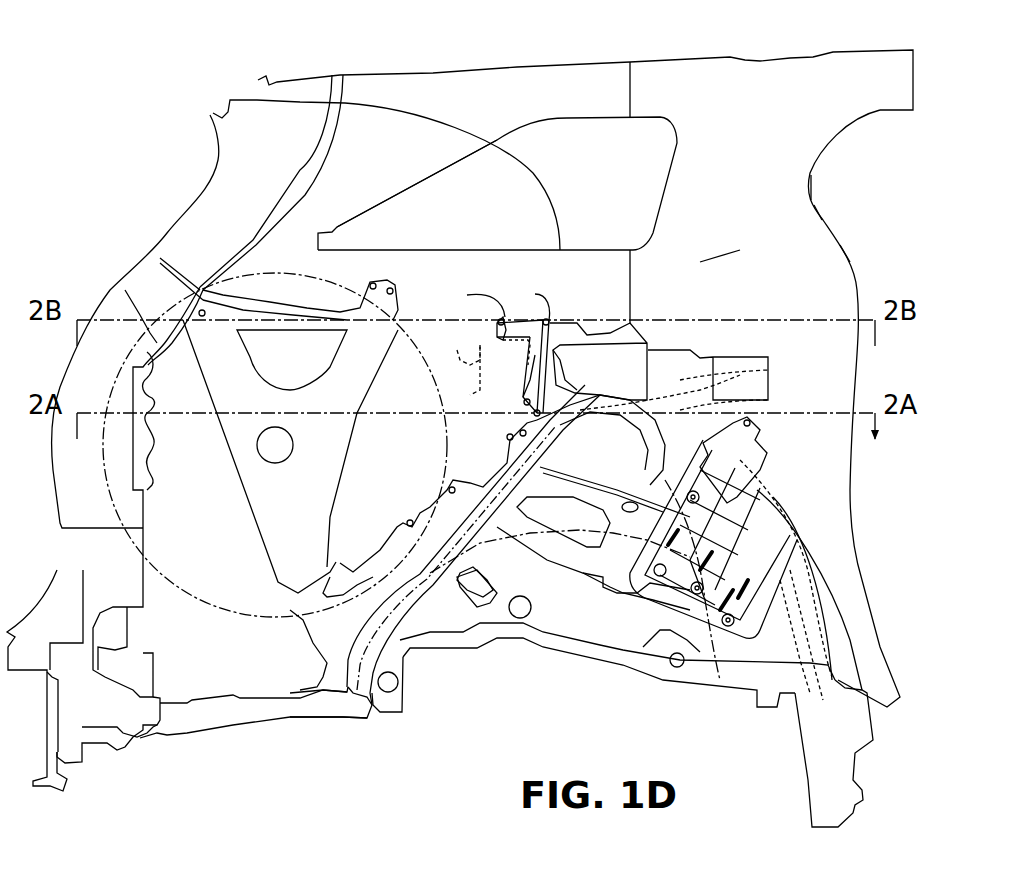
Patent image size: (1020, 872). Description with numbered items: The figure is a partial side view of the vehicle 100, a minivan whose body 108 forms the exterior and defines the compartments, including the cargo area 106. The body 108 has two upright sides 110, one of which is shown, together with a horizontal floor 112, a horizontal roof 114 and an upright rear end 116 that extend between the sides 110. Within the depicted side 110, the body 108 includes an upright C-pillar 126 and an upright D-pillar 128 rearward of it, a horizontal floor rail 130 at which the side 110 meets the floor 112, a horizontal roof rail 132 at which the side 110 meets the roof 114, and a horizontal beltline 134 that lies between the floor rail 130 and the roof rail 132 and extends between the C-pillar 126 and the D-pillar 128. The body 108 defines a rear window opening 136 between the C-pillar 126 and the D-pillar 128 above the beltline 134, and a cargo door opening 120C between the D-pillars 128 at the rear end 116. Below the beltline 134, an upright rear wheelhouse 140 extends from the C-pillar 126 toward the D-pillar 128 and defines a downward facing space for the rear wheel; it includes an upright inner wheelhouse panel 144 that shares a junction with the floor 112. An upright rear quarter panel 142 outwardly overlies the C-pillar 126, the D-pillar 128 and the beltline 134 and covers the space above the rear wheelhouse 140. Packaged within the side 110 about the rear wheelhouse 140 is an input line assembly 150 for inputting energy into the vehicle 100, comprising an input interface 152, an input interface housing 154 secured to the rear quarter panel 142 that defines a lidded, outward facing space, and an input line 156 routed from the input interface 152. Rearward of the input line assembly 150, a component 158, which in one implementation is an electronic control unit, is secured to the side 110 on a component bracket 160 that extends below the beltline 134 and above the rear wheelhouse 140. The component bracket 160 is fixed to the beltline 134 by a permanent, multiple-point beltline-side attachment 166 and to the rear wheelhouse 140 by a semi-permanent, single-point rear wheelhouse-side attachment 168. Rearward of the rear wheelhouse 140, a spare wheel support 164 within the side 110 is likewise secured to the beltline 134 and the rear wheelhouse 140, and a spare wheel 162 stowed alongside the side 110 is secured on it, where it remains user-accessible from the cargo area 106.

The vehicle 100 is at (812, 163).
The cargo area 106 is at (742, 248).
The body 108 is at (813, 188).
The side 110 is at (818, 215).
The floor 112 is at (865, 810).
The roof 114 is at (833, 52).
The rear end 116 is at (182, 212).
The cargo door opening 120C is at (200, 182).
The C-pillar 126 is at (848, 258).
The D-pillar 128 is at (217, 157).
The floor rail 130 is at (867, 780).
The roof rail 132 is at (730, 57).
The beltline 134 is at (300, 102).
The rear window opening 136 is at (467, 197).
The rear wheelhouse 140 is at (770, 497).
The rear quarter panel 142 is at (275, 437).
The inner wheelhouse panel 144 is at (787, 520).
The input line assembly 150 is at (768, 398).
The input interface 152 is at (768, 370).
The input interface housing 154 is at (575, 333).
The input line 156 is at (750, 425).
The component 158 is at (463, 343).
The component bracket 160 is at (530, 380).
The spare wheel 162 is at (200, 287).
The spare wheel support 164 is at (125, 290).
The beltline-side attachment 166 is at (503, 313).
The rear wheelhouse-side attachment 168 is at (507, 423).